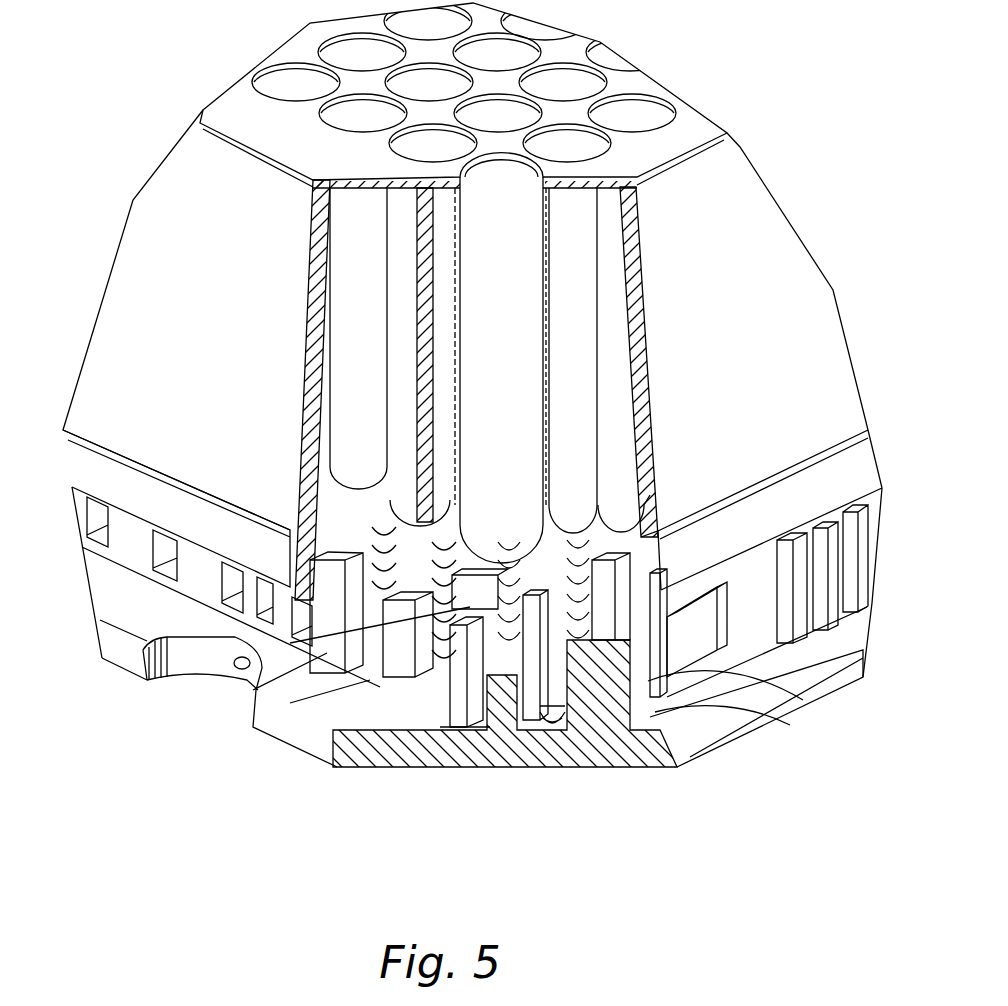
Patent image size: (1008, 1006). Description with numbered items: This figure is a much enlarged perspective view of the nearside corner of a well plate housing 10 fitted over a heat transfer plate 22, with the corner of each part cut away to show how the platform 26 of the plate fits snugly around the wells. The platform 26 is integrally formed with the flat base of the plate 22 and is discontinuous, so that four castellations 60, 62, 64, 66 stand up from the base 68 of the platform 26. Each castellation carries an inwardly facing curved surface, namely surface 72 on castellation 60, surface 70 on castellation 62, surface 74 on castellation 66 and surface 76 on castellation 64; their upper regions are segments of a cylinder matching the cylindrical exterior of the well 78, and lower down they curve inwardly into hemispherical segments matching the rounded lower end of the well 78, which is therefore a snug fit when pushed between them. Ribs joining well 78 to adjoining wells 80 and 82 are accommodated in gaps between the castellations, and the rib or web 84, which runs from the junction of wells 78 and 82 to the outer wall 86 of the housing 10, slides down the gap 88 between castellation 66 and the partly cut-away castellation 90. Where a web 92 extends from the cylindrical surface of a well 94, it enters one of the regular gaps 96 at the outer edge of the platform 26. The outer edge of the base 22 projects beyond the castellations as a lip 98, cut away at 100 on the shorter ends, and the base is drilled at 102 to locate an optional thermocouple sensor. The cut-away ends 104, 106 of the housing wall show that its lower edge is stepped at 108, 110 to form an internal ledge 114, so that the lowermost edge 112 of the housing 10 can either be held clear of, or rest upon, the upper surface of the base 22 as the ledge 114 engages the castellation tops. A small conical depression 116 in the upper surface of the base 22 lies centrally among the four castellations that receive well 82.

The well plate housing 10 is at (156, 211).
The heat transfer plate 22 is at (749, 724).
The platform 26 is at (131, 549).
The castellation 60 is at (416, 665).
The castellation 62 is at (500, 562).
The castellation 64 is at (651, 764).
The castellation 66 is at (450, 682).
The base of the platform 68 is at (455, 725).
The curved surface 70 is at (491, 604).
The curved surface 72 is at (357, 653).
The curved surface 74 is at (327, 655).
The curved surface 76 is at (537, 648).
The well 78 is at (383, 396).
The well 80 is at (369, 315).
The well 82 is at (550, 378).
The rib or web 84 is at (420, 318).
The outer wall 86 is at (330, 360).
The gap 88 is at (476, 704).
The castellation 90 is at (496, 684).
The web 92 is at (627, 475).
The well 94 is at (584, 455).
The gap 96 is at (668, 664).
The lip 98 is at (137, 619).
The cut-away 100 is at (191, 664).
The location hole 102 is at (240, 672).
The cut-away end of the wall 104 is at (317, 270).
The cut-away end of the wall 106 is at (640, 272).
The step 108 is at (260, 550).
The step 110 is at (718, 512).
The lowermost edge 112 is at (659, 621).
The internal ledge 114 is at (672, 515).
The conical depression 116 is at (553, 734).